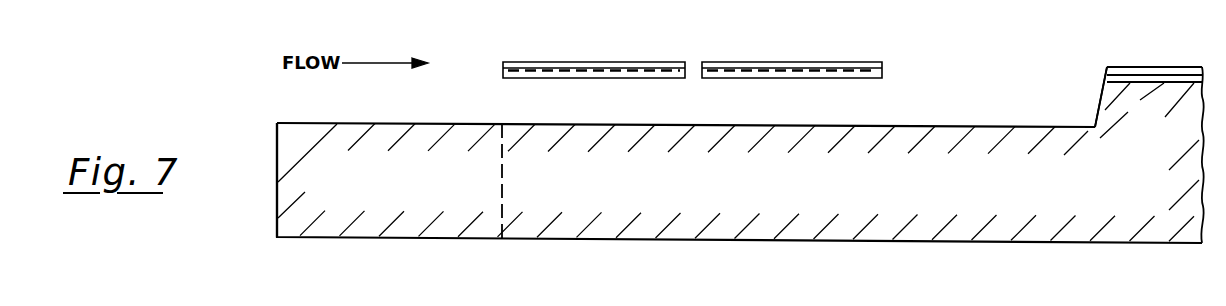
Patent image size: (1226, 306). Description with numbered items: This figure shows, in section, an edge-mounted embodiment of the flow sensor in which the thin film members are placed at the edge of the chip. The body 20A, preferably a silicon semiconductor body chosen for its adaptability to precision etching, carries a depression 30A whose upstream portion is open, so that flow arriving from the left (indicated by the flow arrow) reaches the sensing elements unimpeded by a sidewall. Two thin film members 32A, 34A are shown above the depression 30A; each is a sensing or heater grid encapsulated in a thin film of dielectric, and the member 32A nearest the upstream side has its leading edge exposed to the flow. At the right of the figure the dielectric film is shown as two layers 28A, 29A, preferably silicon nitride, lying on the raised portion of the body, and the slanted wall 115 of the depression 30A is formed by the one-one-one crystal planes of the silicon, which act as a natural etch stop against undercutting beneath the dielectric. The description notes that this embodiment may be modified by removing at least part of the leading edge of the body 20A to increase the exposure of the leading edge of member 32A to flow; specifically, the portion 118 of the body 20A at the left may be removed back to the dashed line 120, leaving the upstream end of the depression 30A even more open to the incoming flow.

The body 20A is at (737, 199).
The depression 30A is at (470, 112).
The thin film member 32A is at (620, 54).
The thin film member 34A is at (834, 54).
The dielectric layer 28A is at (1130, 67).
The dielectric layer 29A is at (1108, 79).
The slanted wall 115 is at (1097, 112).
The portion of body 118 is at (302, 124).
The line 120 is at (504, 181).